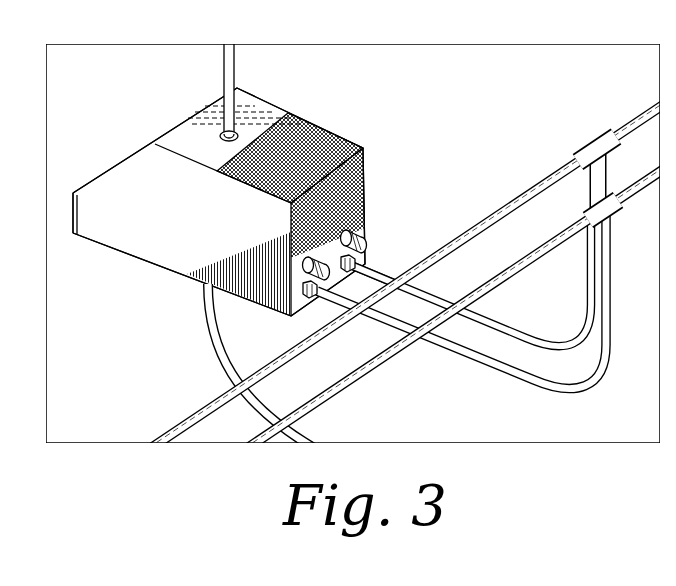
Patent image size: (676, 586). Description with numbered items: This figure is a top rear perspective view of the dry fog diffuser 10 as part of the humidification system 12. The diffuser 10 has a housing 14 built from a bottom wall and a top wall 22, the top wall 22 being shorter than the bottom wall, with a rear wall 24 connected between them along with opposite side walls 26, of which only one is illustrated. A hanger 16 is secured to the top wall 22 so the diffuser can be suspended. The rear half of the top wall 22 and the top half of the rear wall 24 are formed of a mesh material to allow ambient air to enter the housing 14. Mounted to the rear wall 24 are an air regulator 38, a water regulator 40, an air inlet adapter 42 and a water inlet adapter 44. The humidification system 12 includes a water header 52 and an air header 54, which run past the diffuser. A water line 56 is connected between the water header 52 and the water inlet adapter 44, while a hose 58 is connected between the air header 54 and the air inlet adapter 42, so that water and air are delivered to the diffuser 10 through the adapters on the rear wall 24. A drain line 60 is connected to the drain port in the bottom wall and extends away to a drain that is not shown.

The diffuser 10 is at (280, 112).
The humidification system 12 is at (482, 128).
The housing 14 is at (97, 229).
The hanger 16 is at (236, 63).
The top wall 22 is at (197, 130).
The rear wall 24 is at (367, 242).
The side wall 26 is at (140, 235).
The air regulator 38 is at (362, 262).
The water regulator 40 is at (308, 282).
The air inlet adapter 42 is at (403, 262).
The water inlet adapter 44 is at (305, 298).
The water header 52 is at (579, 228).
The air header 54 is at (557, 168).
The water line 56 is at (598, 373).
The hose 58 is at (522, 325).
The drain line 60 is at (197, 323).